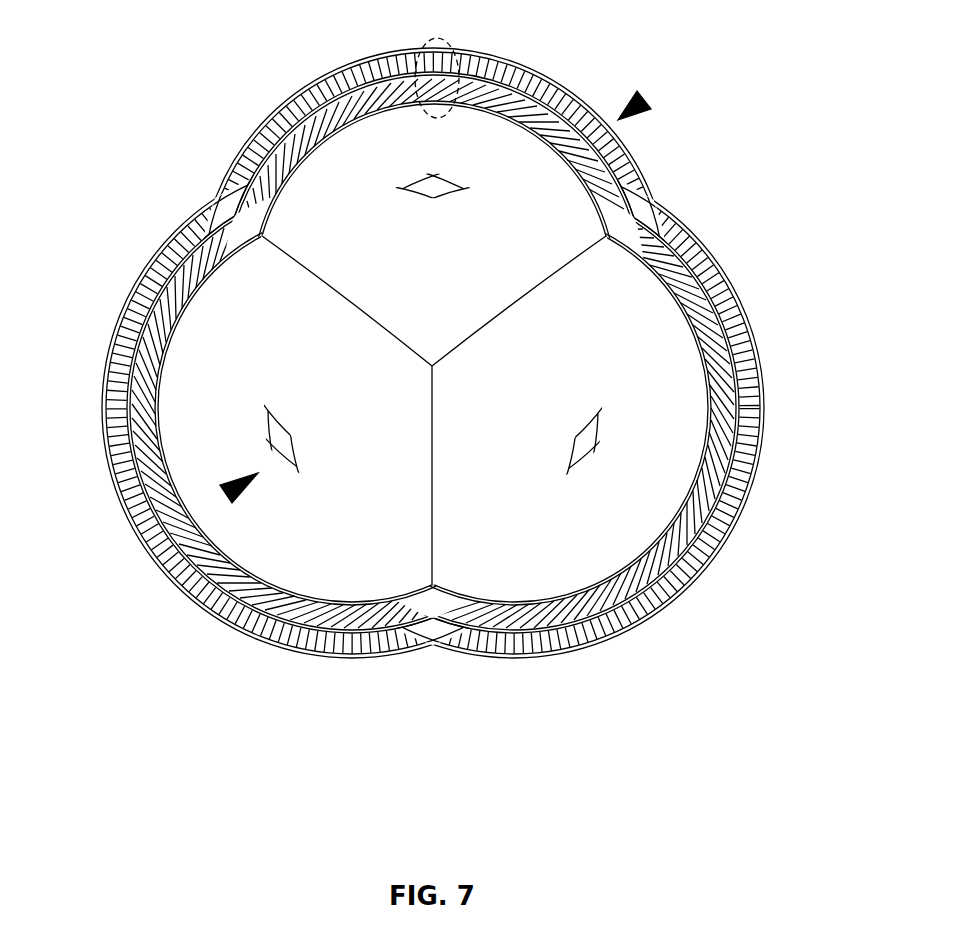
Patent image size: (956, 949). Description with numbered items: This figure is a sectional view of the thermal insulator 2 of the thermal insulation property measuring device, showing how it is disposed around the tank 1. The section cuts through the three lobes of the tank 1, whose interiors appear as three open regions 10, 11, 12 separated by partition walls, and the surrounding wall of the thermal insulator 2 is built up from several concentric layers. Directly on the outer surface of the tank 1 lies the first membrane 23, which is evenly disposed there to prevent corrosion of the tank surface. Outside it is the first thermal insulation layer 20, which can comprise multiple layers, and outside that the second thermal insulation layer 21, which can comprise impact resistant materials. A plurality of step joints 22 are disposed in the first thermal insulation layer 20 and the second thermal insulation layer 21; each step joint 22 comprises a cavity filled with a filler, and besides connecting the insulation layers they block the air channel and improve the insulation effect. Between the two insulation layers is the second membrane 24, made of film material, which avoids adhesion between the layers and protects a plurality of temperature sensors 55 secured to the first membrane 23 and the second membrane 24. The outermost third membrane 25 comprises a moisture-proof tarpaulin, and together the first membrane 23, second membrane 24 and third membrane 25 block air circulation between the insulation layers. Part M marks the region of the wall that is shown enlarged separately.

The tank 1 is at (230, 491).
The thermal insulator 2 is at (642, 102).
The first lumen 10 is at (340, 172).
The second lumen 11 is at (230, 363).
The third lumen 12 is at (634, 488).
The first thermal insulation layer 20 is at (746, 357).
The second thermal insulation layer 21 is at (553, 95).
The step joints 22 is at (340, 83).
The first membrane 23 is at (155, 356).
The second membrane 24 is at (162, 279).
The third membrane 25 is at (316, 89).
The temperature sensors 55 is at (272, 180).
The part M is at (446, 48).